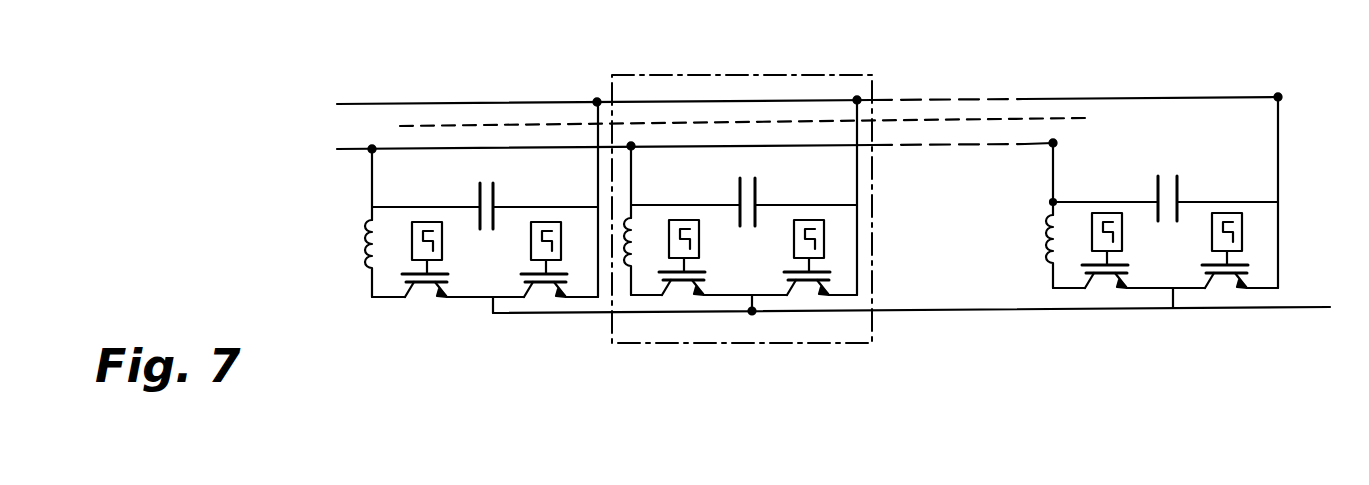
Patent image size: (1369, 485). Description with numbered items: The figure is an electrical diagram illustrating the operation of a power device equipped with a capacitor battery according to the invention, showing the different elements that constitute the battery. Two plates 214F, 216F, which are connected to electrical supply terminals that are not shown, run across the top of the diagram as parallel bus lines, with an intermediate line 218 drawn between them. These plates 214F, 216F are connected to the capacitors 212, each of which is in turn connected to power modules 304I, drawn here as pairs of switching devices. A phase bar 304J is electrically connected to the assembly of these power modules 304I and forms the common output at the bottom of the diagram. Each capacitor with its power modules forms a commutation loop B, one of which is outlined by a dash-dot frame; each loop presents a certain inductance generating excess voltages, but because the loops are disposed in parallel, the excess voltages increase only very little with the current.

The plate 216F is at (407, 64).
The neutral line 218 is at (453, 126).
The plate 214F is at (548, 148).
The capacitor 212 is at (488, 185).
The power module 304I is at (430, 304).
The phase bar 304J is at (956, 311).
The commutation loop B is at (876, 222).